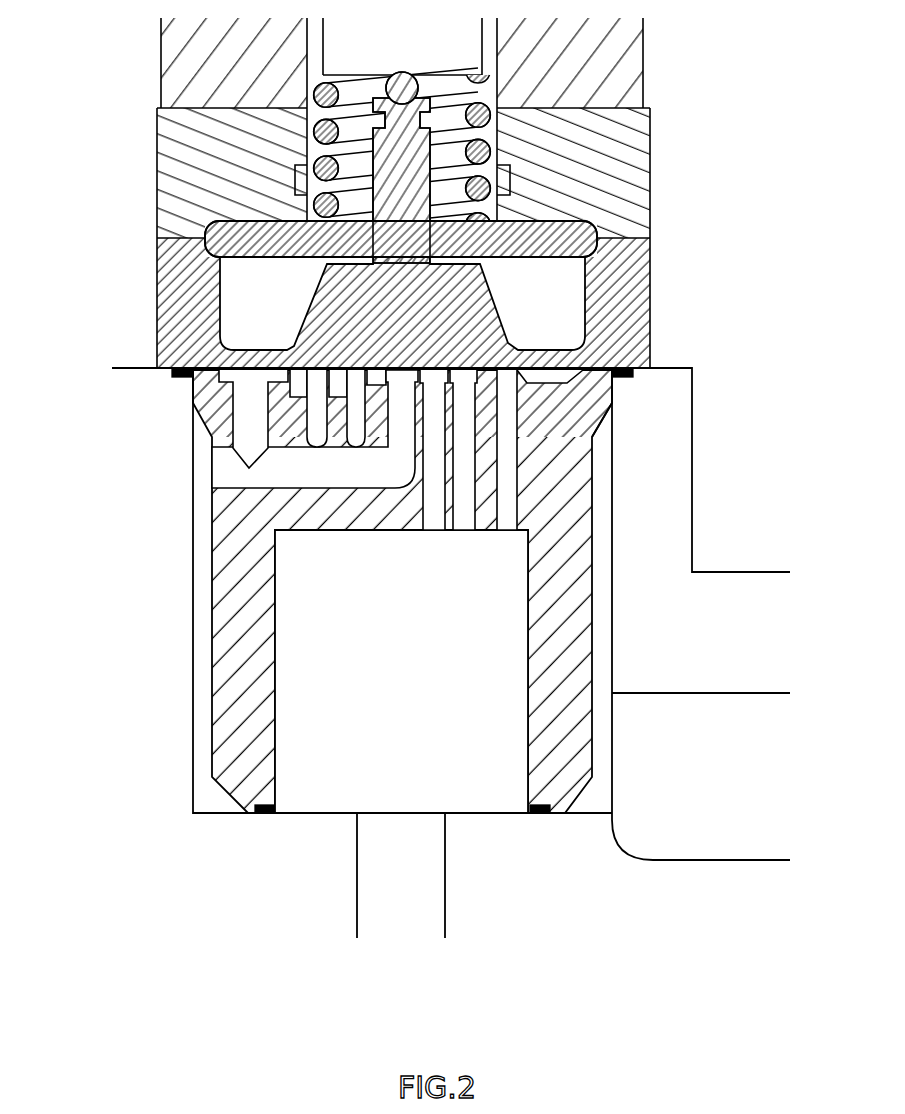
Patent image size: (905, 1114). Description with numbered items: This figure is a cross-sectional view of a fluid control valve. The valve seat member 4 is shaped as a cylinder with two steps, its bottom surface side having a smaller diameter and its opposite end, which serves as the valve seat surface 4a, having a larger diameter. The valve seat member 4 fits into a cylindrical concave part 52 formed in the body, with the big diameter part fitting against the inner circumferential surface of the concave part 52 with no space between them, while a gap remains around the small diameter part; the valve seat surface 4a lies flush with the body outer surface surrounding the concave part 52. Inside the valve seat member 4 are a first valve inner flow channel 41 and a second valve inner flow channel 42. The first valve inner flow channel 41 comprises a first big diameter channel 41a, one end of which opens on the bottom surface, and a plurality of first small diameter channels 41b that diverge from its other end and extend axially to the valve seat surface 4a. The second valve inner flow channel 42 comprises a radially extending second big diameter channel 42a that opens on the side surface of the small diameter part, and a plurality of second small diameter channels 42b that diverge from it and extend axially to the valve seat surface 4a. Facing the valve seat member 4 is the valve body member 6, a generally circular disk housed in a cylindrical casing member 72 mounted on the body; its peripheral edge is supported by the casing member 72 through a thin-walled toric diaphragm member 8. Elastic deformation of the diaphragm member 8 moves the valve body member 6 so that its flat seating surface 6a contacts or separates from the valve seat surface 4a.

The valve seat member 4 is at (200, 590).
The valve seat surface 4a is at (408, 372).
The valve body member 6 is at (497, 302).
The seating surface 6a is at (595, 400).
The diaphragm member 8 is at (265, 350).
The first valve inner flow channel 41 is at (455, 578).
The first big diameter channel 41a is at (443, 648).
The first small diameter channels 41b is at (433, 517).
The second valve inner flow channel 42 is at (371, 595).
The second big diameter channel 42a is at (292, 470).
The second small diameter channels 42b is at (340, 470).
The cylindrical concave part 52 is at (613, 565).
The casing member 72 is at (157, 270).